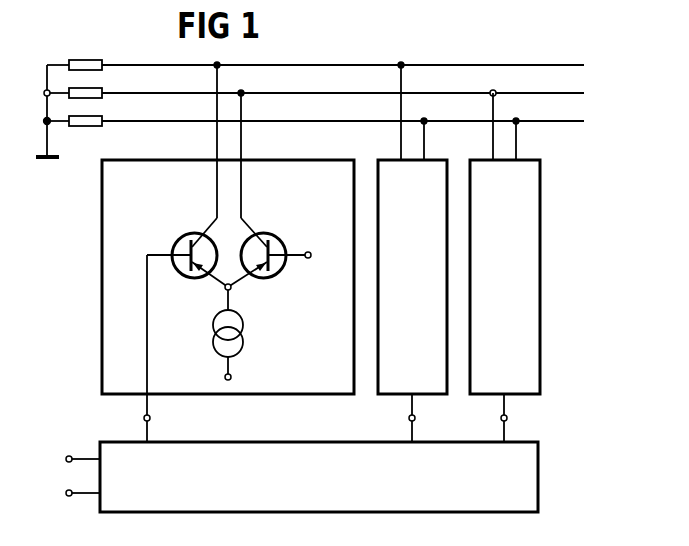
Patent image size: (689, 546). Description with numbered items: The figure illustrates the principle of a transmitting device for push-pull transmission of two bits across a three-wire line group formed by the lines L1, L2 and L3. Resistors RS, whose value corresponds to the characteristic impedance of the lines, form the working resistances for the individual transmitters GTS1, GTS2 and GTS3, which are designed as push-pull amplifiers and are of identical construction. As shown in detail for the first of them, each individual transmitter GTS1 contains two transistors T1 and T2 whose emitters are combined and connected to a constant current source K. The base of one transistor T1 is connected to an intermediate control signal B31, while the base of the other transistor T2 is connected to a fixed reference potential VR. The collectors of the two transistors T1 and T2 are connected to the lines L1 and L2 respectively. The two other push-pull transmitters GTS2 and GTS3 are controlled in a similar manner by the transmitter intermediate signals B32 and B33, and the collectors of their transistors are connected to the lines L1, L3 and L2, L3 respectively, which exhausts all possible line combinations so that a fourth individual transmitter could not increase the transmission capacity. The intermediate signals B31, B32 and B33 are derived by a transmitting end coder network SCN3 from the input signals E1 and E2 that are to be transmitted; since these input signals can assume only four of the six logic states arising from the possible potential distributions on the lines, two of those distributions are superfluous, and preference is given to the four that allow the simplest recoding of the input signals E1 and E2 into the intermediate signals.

The line L1 is at (331, 66).
The line L2 is at (331, 94).
The line L3 is at (331, 122).
The resistors RS is at (69, 95).
The individual transmitter GTS1 is at (101, 278).
The push-pull transmitter GTS2 is at (412, 277).
The push-pull transmitter GTS3 is at (505, 277).
The transistor T1 is at (187, 174).
The transistor T2 is at (266, 188).
The fixed reference potential VR is at (323, 257).
The constant current source K is at (239, 335).
The intermediate (control) signal B31 is at (165, 348).
The transmitter intermediate signal B32 is at (429, 418).
The transmitter intermediate signal B33 is at (521, 418).
The transmitting end coder network SCN3 is at (319, 477).
The input signal E1 is at (67, 460).
The input signal E2 is at (67, 494).